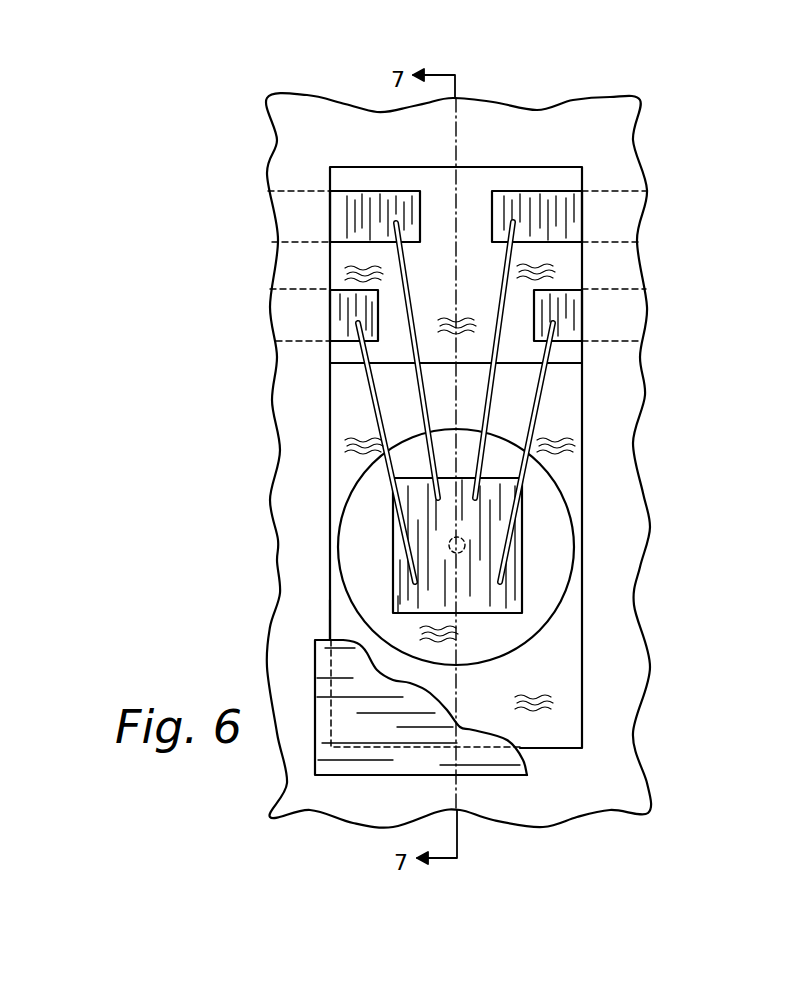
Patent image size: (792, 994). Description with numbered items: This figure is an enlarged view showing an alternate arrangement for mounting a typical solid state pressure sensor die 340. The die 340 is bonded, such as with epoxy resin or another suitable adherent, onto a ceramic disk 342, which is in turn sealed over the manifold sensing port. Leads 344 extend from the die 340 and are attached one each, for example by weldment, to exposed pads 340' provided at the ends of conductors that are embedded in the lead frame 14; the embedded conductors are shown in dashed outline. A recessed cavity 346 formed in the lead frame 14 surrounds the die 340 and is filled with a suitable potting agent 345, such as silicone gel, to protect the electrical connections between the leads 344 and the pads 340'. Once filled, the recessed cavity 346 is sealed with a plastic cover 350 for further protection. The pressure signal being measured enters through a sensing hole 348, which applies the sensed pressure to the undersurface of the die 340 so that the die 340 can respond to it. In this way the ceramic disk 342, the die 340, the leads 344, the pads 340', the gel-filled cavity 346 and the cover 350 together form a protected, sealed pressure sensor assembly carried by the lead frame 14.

The lead frame 14 is at (268, 181).
The exposed pads 340' is at (448, 198).
The ceramic disk 342 is at (563, 483).
The solid state pressure sensor die 340 is at (555, 545).
The leads 344 is at (425, 392).
The potting agent 345 is at (543, 690).
The recessed cavity 346 is at (330, 608).
The sensing hole 348 is at (447, 547).
The plastic cover 350 is at (353, 772).